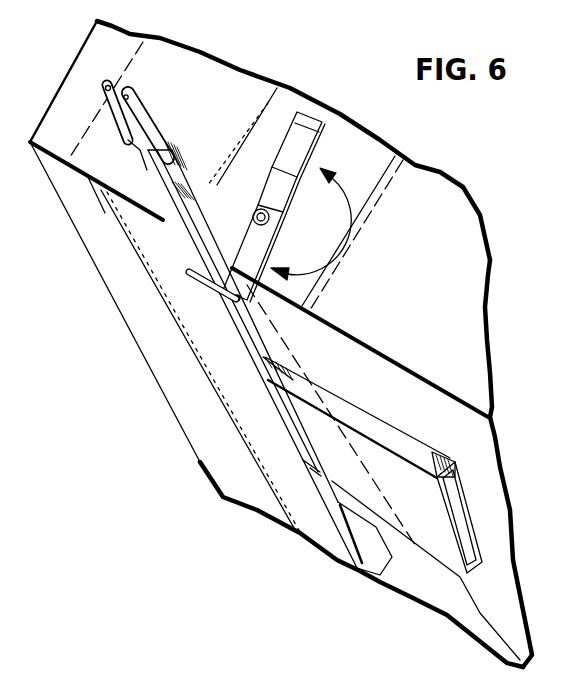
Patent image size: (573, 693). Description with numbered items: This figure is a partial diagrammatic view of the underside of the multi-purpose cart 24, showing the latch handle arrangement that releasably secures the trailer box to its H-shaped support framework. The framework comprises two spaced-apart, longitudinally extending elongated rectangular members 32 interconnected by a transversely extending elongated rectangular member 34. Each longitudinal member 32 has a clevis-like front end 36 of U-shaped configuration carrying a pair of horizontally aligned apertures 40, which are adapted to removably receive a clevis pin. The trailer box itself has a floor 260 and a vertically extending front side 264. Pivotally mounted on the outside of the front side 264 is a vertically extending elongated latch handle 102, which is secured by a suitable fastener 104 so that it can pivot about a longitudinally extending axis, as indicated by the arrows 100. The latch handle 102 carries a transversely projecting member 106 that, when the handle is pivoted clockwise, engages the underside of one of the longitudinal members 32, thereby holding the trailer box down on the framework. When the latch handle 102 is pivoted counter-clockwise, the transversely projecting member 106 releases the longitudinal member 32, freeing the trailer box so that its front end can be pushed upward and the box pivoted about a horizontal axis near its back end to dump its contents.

The multi-purpose cart 24 is at (463, 230).
The front side 264 is at (460, 332).
The floor 260 is at (253, 487).
The clevis-like front end 36 is at (140, 114).
The apertures 40 is at (128, 96).
The longitudinally extending elongated rectangular member 32 is at (185, 238).
The latch handle 102 is at (304, 149).
The fastener 104 is at (256, 215).
The transversely projecting member 106 is at (217, 300).
The arrows 100 is at (350, 240).
The transversely extending elongated rectangular member 34 is at (395, 437).